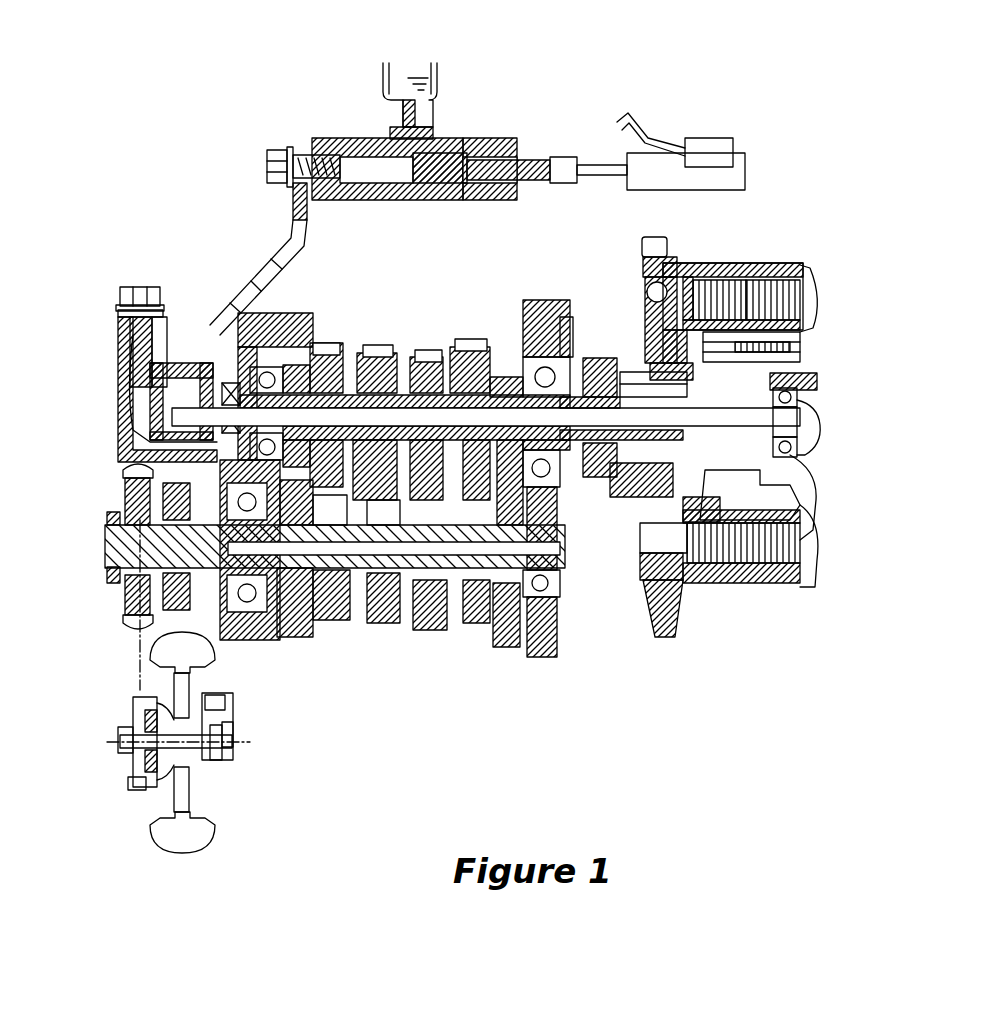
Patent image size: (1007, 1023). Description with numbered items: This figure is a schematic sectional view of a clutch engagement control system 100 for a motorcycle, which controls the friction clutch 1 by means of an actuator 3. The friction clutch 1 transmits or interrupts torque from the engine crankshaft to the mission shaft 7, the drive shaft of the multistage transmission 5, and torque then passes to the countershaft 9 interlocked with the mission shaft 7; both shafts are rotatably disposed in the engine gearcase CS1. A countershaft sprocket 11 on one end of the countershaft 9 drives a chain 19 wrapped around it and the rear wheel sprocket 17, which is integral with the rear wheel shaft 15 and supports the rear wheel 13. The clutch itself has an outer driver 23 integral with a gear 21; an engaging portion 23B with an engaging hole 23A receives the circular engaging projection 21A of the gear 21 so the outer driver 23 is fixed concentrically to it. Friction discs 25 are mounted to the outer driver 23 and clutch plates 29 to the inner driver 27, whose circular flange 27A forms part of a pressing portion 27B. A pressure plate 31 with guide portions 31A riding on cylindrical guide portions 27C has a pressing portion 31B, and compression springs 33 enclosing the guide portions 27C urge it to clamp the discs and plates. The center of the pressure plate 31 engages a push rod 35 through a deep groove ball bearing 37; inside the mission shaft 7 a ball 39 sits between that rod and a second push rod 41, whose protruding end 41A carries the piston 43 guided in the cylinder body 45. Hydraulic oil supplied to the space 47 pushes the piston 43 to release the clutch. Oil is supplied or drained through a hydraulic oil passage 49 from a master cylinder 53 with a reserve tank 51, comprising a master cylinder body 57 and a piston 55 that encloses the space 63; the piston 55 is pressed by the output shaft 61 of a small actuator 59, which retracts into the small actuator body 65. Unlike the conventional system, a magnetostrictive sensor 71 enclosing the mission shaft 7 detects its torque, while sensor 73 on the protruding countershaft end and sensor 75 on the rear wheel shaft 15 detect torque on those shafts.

The friction clutch 1 is at (816, 183).
The actuator 3 is at (136, 218).
The multistage transmission 5 is at (378, 336).
The mission shaft 7 is at (518, 370).
The countershaft 9 is at (445, 640).
The countershaft sprocket 11 is at (130, 620).
The rear wheel 13 is at (215, 843).
The rear wheel shaft 15 is at (168, 712).
The rear wheel sprocket 17 is at (135, 762).
The chain 19 is at (140, 658).
The gear 21 is at (641, 244).
The circular engaging projection 21A is at (655, 318).
The outer driver 23 is at (728, 268).
The engaging hole 23A is at (665, 348).
The engaging portion 23B is at (713, 262).
The friction discs 25 is at (767, 264).
The inner driver 27 is at (773, 500).
The circular flange 27A is at (668, 600).
The pressing portion 27B is at (700, 565).
The cylindrical guide portions 27C is at (792, 382).
The clutch plates 29 is at (790, 268).
The pressure plate 31 is at (800, 300).
The guide portions 31A is at (790, 391).
The pressing portion 31B is at (800, 553).
The compression springs 33 is at (812, 322).
The push rod 35 is at (802, 437).
The deep groove ball bearing 37 is at (800, 470).
The ball 39 is at (785, 428).
The push rod 41 is at (339, 372).
The protruding end 41A is at (197, 335).
The piston 43 is at (180, 393).
The cylinder body 45 is at (133, 453).
The space 47 is at (118, 390).
The hydraulic oil passage 49 is at (232, 287).
The reserve tank 51 is at (382, 75).
The master cylinder 53 is at (464, 90).
The piston 55 is at (437, 187).
The master cylinder body 57 is at (492, 138).
The small actuator 59 is at (742, 152).
The output shaft 61 is at (590, 155).
The space 63 is at (365, 140).
The small actuator body 65 is at (667, 133).
The magnetostrictive sensor 71 is at (612, 498).
The magnetostrictive sensor 73 is at (200, 604).
The magnetostrictive sensor 75 is at (152, 800).
The clutch engagement control system 100 is at (792, 668).
The engine gearcase CS1 is at (565, 645).